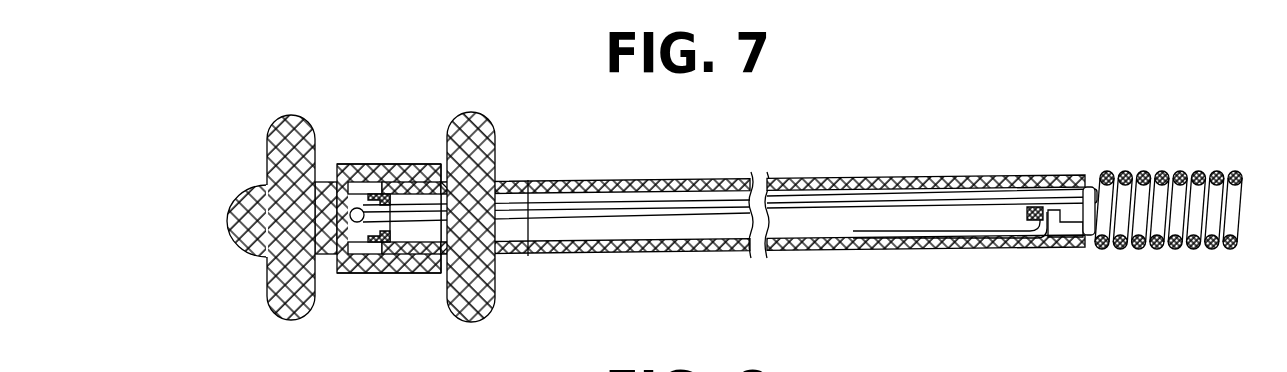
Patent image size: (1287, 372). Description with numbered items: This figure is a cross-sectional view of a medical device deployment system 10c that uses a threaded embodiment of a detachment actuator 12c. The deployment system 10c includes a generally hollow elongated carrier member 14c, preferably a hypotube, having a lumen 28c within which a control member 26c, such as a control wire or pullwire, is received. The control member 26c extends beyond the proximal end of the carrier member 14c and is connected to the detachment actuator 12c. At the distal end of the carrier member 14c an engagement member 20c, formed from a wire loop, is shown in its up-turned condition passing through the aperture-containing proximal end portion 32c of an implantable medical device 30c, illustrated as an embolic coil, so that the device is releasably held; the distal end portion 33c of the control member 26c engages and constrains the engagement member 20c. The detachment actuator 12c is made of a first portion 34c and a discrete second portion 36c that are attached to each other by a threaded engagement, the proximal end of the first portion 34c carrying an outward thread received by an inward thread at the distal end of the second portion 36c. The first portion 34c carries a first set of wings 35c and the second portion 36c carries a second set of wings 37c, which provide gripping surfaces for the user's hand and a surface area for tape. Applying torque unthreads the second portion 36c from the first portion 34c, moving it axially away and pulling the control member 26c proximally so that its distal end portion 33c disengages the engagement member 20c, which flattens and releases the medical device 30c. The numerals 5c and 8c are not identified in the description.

In FIG. 7, the deployment system 10c is at (830, 118).
In FIG. 8, the deployment system 10c is at (942, 356).
In FIG. 7, the detachment actuator 12c is at (401, 136).
In FIG. 7, the second portion 36c is at (233, 180).
In FIG. 7, the second set of wings 37c is at (285, 115).
In FIG. 7, the hub 5c is at (353, 164).
In FIG. 7, the latch 8c is at (385, 192).
In FIG. 7, the first set of wings 35c is at (463, 117).
In FIG. 7, the first portion 34c is at (498, 178).
In FIG. 7, the carrier member 14c is at (715, 255).
In FIG. 7, the lumen 28c is at (797, 253).
In FIG. 7, the control member 26c is at (657, 207).
In FIG. 7, the engagement member 20c is at (1030, 253).
In FIG. 7, the proximal end portion 32c is at (1070, 252).
In FIG. 7, the distal end portion 33c is at (1085, 192).
In FIG. 7, the implantable medical device 30c is at (1182, 165).